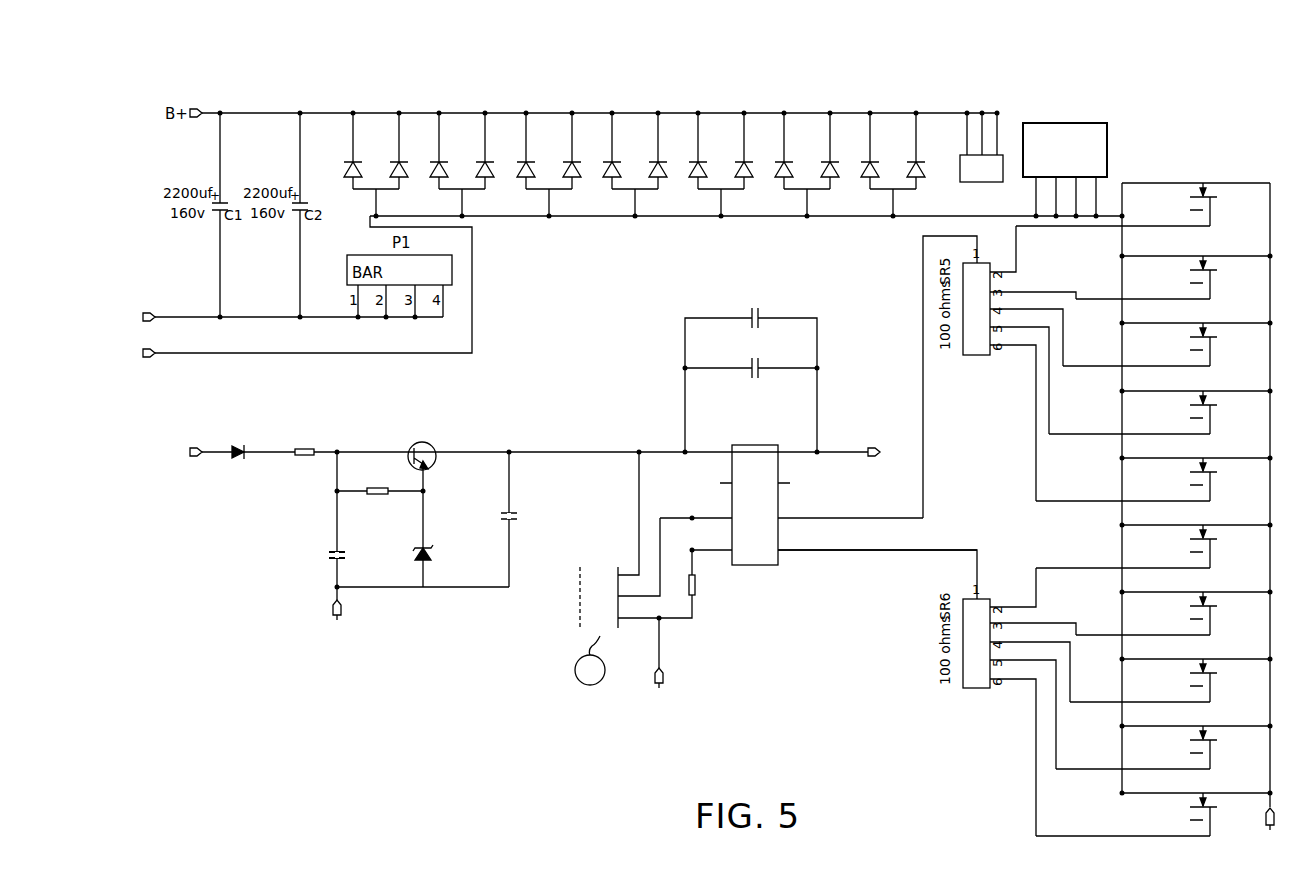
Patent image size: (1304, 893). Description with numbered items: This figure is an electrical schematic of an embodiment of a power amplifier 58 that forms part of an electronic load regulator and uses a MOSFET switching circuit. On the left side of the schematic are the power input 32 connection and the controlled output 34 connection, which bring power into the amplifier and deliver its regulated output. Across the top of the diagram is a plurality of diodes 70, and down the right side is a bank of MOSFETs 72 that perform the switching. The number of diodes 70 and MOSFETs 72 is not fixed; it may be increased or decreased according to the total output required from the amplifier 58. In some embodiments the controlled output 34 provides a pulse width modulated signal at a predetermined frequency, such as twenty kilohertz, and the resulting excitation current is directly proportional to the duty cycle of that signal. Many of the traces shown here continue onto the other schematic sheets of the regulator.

The power input 32 is at (160, 313).
The controlled output 34 is at (157, 357).
The power amplifier 58 is at (470, 638).
The diodes 70 is at (905, 100).
The MOSFETs 72 is at (1225, 146).